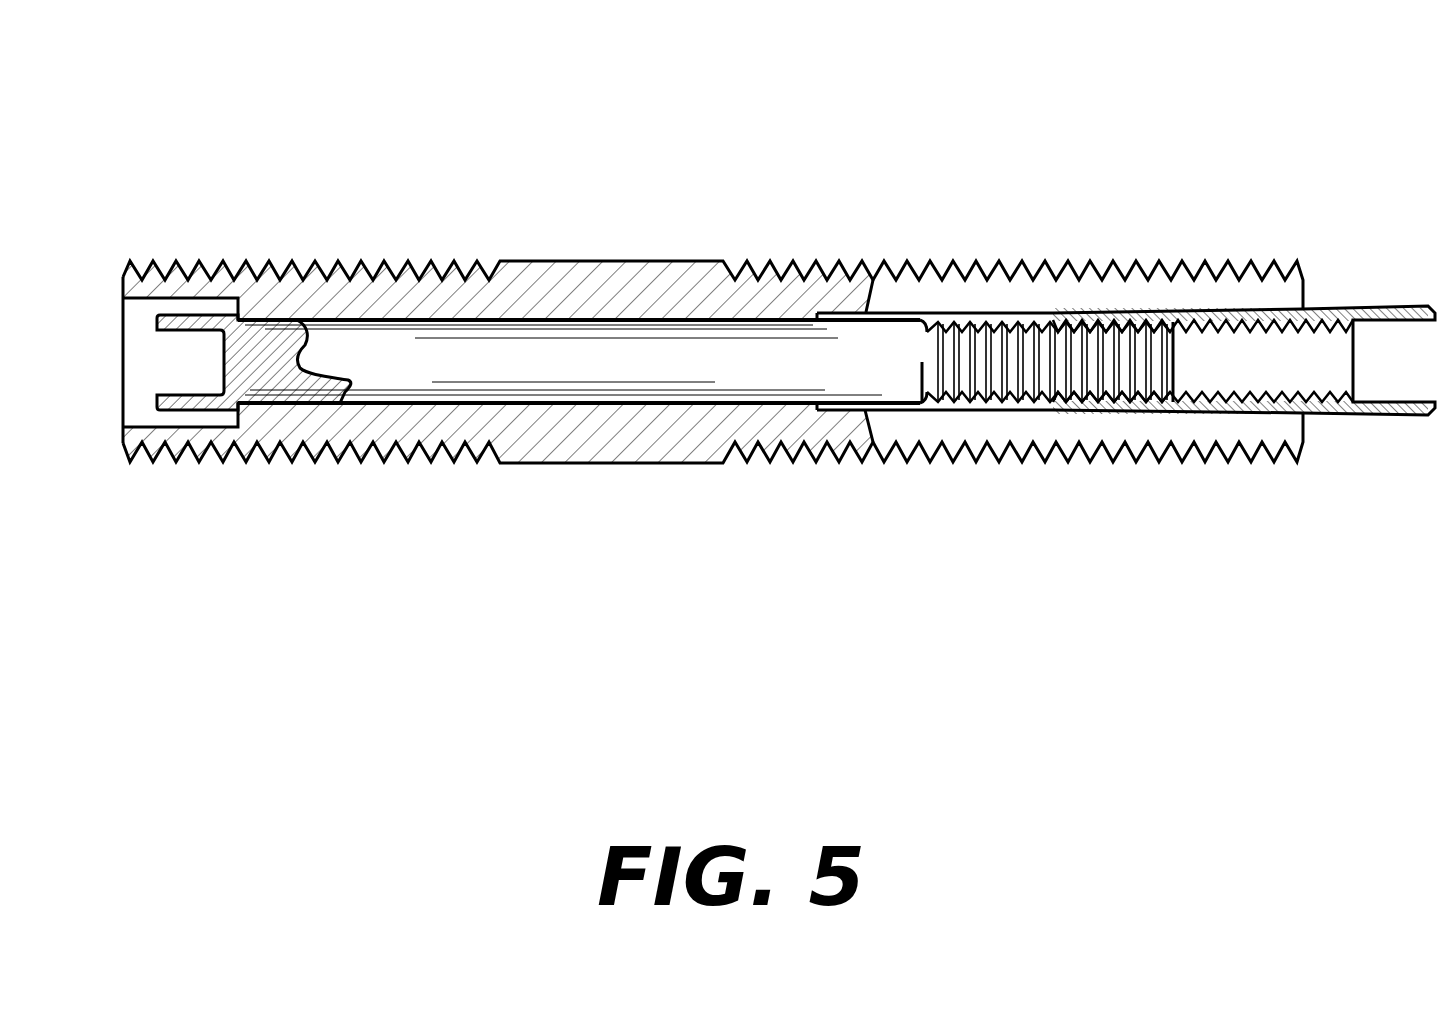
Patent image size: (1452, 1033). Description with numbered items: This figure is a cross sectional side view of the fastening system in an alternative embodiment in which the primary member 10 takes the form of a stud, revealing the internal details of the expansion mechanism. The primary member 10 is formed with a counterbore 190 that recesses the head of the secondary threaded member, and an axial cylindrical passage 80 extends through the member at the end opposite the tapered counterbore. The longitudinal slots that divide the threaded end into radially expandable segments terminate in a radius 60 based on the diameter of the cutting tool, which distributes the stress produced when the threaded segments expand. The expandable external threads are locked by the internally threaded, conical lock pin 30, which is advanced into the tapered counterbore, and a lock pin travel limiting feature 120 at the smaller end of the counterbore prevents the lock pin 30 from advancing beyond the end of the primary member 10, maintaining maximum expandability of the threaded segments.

The primary member 10 is at (530, 261).
The counterbore 190 is at (170, 272).
The radius 60 is at (870, 288).
The lock pin travel limiting feature 120 is at (817, 407).
The axial cylindrical passage 80 is at (927, 408).
The lock pin 30 is at (1363, 306).